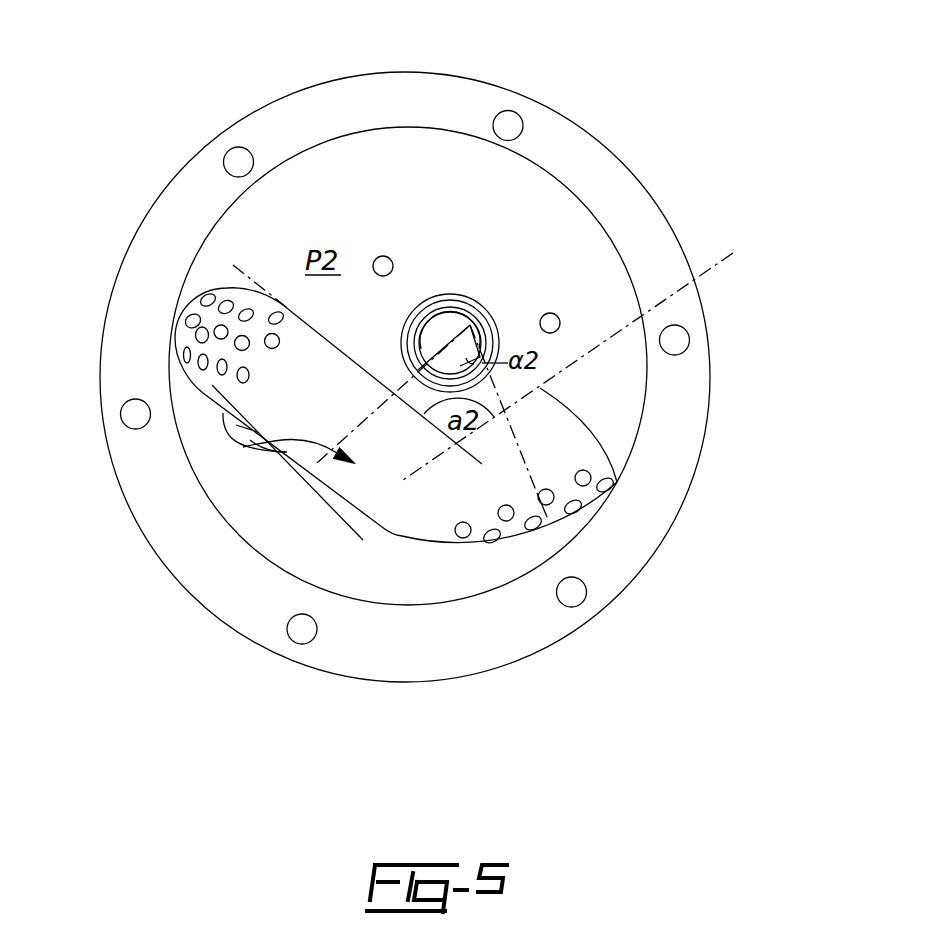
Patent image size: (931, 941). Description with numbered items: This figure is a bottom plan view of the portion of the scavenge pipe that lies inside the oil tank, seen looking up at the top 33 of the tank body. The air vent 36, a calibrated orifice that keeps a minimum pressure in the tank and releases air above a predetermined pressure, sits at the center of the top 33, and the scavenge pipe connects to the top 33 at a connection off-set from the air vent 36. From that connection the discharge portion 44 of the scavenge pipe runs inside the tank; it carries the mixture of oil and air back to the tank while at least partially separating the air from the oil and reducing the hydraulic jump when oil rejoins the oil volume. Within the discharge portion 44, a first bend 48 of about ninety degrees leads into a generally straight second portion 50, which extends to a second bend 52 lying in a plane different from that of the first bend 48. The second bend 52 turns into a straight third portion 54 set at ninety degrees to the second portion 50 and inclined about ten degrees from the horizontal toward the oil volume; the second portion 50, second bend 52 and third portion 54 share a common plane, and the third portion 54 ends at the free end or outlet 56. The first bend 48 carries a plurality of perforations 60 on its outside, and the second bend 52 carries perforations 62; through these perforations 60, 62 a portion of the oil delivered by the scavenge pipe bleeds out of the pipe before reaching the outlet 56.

The top 33 is at (521, 114).
The air vent 36 is at (480, 300).
The discharge portion 44 is at (243, 447).
The first bend 48 is at (183, 328).
The second portion 50 is at (313, 491).
The second bend 52 is at (428, 515).
The third portion 54 is at (623, 503).
The outlet 56 is at (575, 445).
The perforations 60 is at (213, 392).
The perforations 62 is at (502, 522).